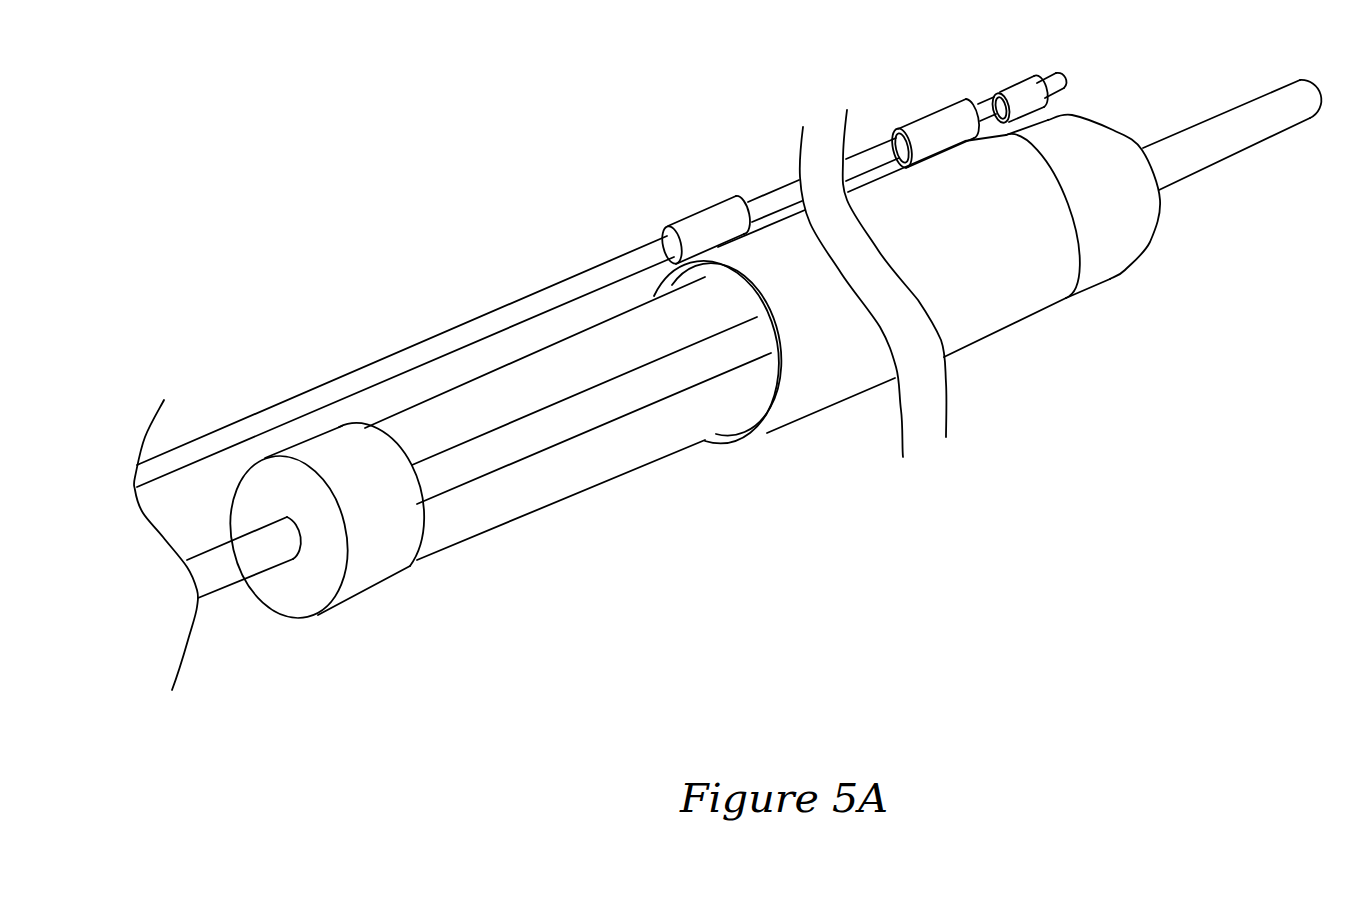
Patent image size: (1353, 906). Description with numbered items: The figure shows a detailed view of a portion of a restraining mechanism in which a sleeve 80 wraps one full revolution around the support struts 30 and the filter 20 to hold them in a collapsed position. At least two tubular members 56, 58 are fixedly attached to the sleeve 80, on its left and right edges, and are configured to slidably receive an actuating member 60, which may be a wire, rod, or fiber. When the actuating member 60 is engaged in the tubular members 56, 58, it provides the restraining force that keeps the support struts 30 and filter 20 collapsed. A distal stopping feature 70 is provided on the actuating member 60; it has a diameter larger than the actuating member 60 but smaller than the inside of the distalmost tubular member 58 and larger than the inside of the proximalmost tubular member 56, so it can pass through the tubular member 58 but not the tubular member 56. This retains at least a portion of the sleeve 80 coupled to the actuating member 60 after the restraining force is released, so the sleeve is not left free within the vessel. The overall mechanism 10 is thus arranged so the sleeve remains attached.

The catheter assembly 10 is at (387, 625).
The filter 20 is at (1097, 287).
The support struts 30 is at (527, 420).
The tubular member 56 is at (698, 200).
The tubular member 58 is at (930, 108).
The actuating member 60 is at (472, 313).
The distal stopping feature 70 is at (1025, 68).
The sleeve 80 is at (960, 352).